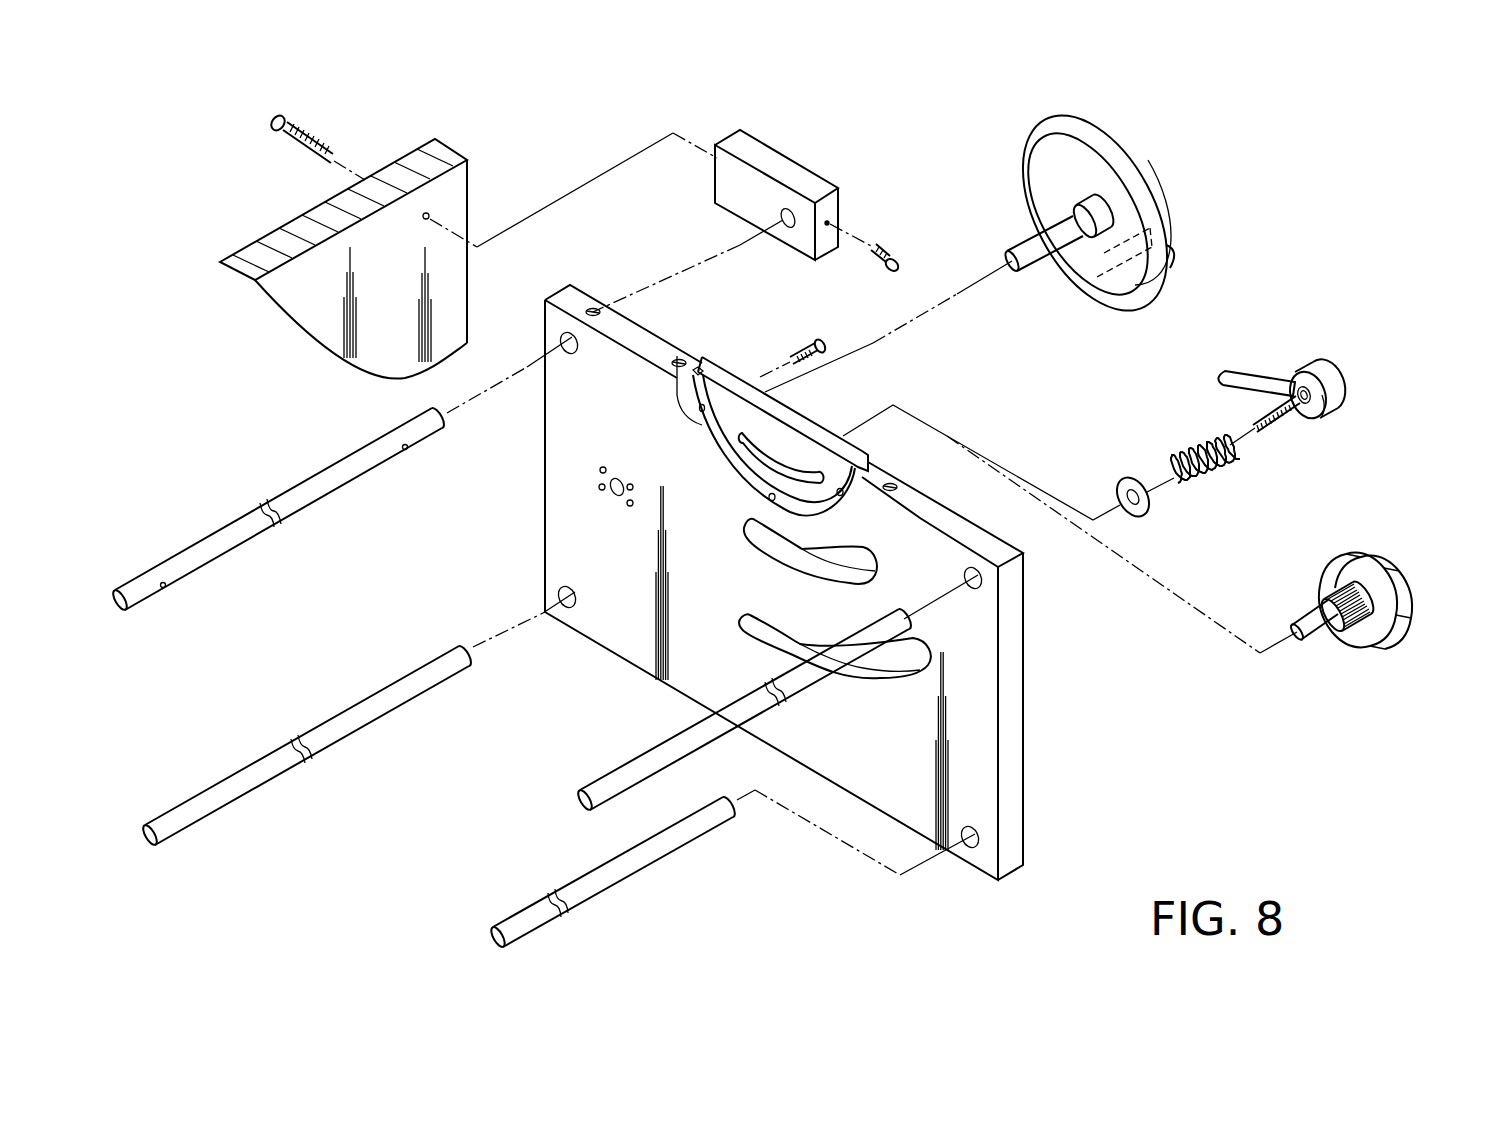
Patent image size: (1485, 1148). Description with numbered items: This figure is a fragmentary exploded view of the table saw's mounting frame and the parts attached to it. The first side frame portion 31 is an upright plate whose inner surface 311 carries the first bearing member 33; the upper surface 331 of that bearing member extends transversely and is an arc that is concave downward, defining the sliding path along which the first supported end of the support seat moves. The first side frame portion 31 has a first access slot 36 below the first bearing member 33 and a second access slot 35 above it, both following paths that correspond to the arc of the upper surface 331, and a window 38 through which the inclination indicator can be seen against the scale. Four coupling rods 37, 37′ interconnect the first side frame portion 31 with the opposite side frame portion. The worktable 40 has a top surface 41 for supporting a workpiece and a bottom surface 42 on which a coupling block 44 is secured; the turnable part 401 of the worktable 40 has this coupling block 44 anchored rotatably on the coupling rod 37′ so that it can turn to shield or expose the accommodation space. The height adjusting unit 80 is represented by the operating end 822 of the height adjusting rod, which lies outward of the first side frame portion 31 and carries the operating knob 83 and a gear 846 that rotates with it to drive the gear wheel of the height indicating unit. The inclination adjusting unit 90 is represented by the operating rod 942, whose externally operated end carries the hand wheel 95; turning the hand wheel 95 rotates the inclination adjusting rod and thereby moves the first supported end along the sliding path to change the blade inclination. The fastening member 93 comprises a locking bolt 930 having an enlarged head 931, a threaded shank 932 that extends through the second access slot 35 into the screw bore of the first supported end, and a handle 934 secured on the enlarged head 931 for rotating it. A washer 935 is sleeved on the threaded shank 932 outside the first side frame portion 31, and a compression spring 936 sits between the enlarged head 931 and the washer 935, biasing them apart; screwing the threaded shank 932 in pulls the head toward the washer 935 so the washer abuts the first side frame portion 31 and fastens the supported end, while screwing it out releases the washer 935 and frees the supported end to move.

The first side frame portion 31 is at (851, 582).
The inner surface 311 is at (977, 707).
The first bearing member 33 is at (811, 404).
The upper surface 331 is at (714, 414).
The second access slot 35 is at (818, 472).
The first access slot 36 is at (868, 553).
The coupling rod 37 is at (383, 693).
The coupling rod 37′ is at (333, 468).
The window 38 is at (870, 678).
The worktable 40 is at (421, 246).
The turnable part 401 is at (443, 152).
The top surface 41 is at (243, 247).
The bottom surface 42 is at (307, 297).
The coupling block 44 is at (760, 153).
The height adjusting unit 80 is at (1332, 625).
The operating end 822 is at (1323, 613).
The operating knob 83 is at (1407, 618).
The gear 846 is at (1320, 583).
The inclination adjusting unit 90 is at (1031, 242).
The operating rod 942 is at (1018, 250).
The hand wheel 95 is at (1167, 197).
The fastening member 93 is at (1322, 360).
The locking bolt 930 is at (1345, 370).
The enlarged head 931 is at (1333, 403).
The threaded shank 932 is at (1295, 423).
The handle 934 is at (1237, 372).
The washer 935 is at (1128, 480).
The compression spring 936 is at (1193, 450).